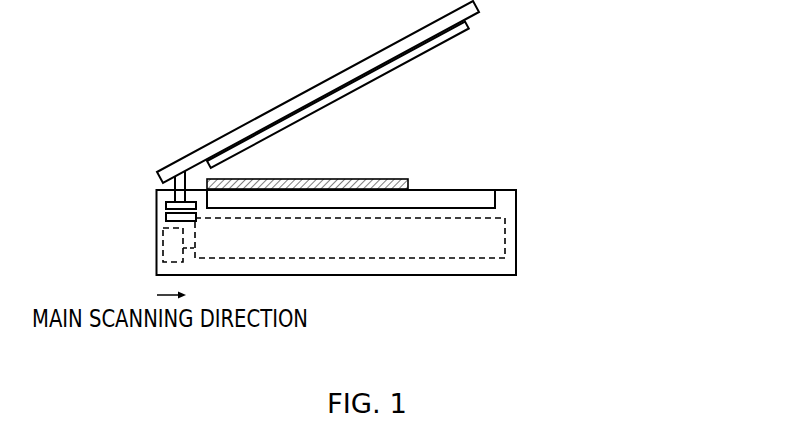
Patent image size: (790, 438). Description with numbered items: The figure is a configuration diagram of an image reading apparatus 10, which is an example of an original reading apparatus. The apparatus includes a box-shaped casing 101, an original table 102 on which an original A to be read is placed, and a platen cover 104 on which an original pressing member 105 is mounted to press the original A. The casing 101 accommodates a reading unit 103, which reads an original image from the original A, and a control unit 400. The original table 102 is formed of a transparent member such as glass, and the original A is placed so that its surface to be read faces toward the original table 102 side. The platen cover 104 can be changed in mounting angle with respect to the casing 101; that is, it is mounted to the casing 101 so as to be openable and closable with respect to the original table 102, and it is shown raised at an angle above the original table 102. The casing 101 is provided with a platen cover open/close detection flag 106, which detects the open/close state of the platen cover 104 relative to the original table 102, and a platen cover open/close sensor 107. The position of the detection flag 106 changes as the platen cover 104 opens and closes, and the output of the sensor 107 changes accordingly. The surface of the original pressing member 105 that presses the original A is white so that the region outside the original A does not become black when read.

The image reading apparatus 10 is at (241, 76).
The casing 101 is at (480, 276).
The original table 102 is at (495, 197).
The reading unit 103 is at (505, 247).
The platen cover 104 is at (222, 136).
The original pressing member 105 is at (318, 113).
The platen cover open/close detection flag 106 is at (177, 173).
The platen cover open/close sensor 107 is at (162, 200).
The control unit 400 is at (162, 243).
The original A is at (404, 179).